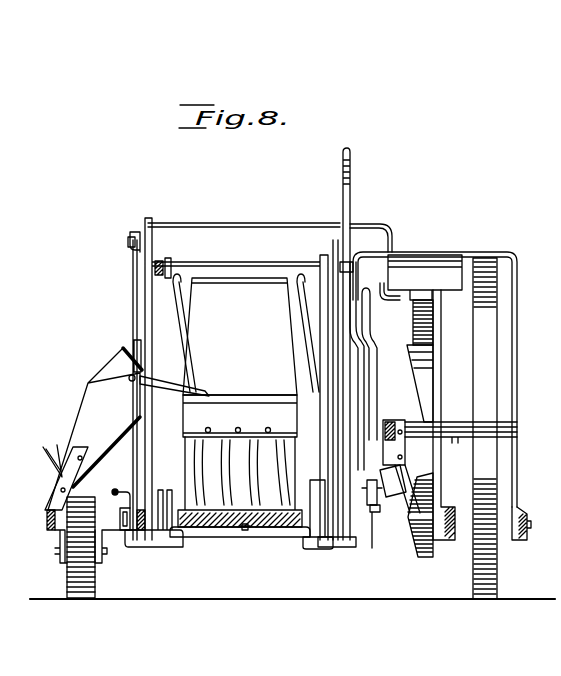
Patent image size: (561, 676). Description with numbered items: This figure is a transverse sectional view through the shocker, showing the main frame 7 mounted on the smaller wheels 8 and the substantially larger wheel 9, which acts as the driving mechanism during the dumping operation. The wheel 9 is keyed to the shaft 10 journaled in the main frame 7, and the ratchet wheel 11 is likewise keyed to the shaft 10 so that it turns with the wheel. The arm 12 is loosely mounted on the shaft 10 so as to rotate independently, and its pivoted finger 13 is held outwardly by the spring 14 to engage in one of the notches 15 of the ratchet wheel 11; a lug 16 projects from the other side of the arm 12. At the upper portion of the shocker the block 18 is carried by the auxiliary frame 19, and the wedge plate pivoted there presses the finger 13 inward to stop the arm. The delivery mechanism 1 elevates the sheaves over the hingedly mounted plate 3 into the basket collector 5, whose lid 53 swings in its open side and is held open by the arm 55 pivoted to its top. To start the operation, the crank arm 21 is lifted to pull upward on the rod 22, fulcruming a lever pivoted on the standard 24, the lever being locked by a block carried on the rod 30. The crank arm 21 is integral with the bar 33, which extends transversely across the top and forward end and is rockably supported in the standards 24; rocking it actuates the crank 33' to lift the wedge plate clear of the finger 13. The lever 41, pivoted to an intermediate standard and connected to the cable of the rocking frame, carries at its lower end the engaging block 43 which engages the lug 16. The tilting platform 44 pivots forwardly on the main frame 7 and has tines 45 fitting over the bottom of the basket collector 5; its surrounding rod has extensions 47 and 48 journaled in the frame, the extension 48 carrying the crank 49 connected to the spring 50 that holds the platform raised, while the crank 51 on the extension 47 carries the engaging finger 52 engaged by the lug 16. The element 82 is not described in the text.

The delivery mechanism 1 is at (62, 435).
The hingedly mounted plate 3 is at (182, 392).
The basket collector 5 is at (177, 435).
The main frame 7 is at (532, 532).
The wheels 8 is at (66, 577).
The wheel 9 is at (498, 578).
The shaft 10 is at (458, 421).
The ratchet wheel 11 is at (428, 381).
The arm 12 is at (388, 443).
The pivoted finger 13 is at (407, 519).
The spring 14 is at (400, 498).
The notches 15 is at (412, 331).
The lug 16 is at (374, 480).
The block 18 is at (379, 279).
The auxiliary frame 19 is at (428, 272).
The crank arm 21 is at (130, 236).
The rod 22 is at (133, 327).
The standard 24 is at (153, 246).
The rod 30 is at (154, 268).
The bar 33 is at (244, 213).
The crank 33' is at (394, 228).
The lever 41 is at (351, 215).
The engaging block 43 is at (375, 549).
The tilting platform 44 is at (240, 416).
The tines 45 is at (232, 500).
The extension 47 is at (320, 550).
The extension 48 is at (166, 549).
The crank 49 is at (120, 490).
The spring 50 is at (112, 490).
The crank 51 is at (352, 549).
The engaging finger 52 is at (370, 379).
The lid 53 is at (240, 336).
The arm 55 is at (172, 292).
The block 82 is at (128, 549).